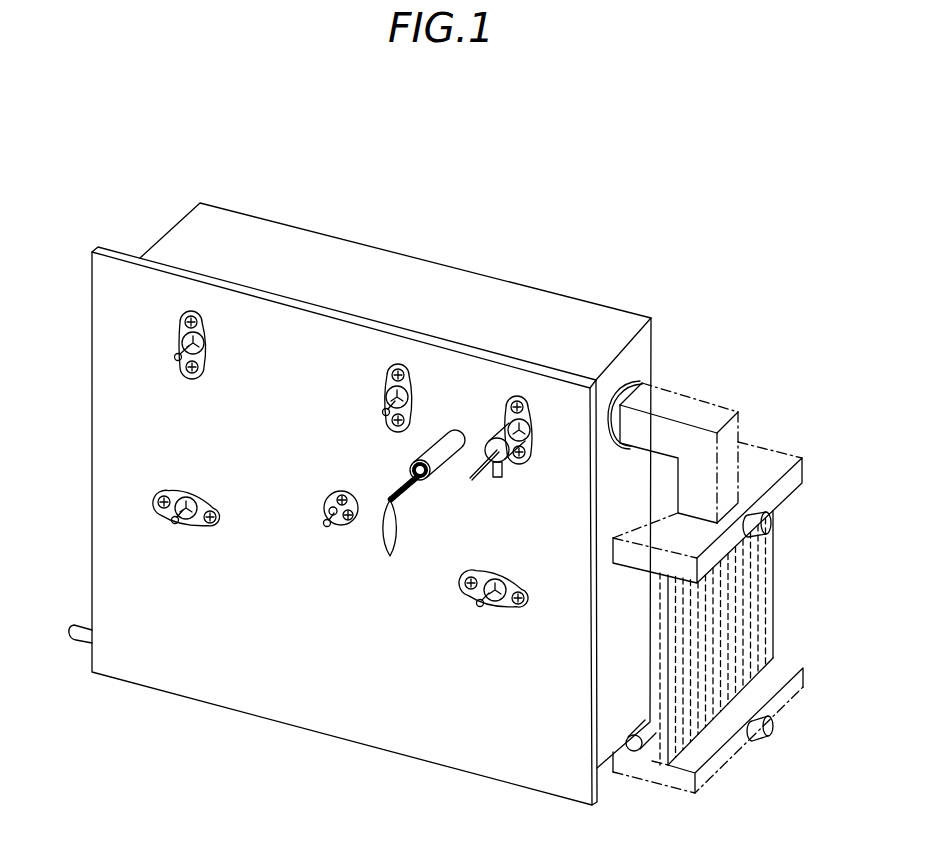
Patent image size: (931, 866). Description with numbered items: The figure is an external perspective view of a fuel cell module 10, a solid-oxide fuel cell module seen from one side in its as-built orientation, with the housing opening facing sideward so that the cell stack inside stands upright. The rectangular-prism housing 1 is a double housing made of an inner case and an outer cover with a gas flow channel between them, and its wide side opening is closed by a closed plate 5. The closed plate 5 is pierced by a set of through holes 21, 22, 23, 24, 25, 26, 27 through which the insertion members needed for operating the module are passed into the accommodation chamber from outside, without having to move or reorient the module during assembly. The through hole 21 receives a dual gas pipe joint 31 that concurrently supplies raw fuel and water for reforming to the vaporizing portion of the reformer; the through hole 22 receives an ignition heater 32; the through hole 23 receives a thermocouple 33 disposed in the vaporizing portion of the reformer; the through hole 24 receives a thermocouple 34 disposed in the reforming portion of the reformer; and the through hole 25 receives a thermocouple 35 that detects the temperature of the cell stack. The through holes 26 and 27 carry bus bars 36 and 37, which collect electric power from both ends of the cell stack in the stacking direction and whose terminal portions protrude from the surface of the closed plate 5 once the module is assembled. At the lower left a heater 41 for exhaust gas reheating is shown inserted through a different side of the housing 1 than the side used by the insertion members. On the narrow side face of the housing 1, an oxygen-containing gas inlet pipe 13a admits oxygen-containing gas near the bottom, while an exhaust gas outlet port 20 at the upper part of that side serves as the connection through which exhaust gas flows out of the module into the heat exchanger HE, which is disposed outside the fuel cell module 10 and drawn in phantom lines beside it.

The housing 1 is at (285, 265).
The closed plate 5 is at (118, 250).
The fuel cell module 10 is at (601, 286).
The oxygen-containing gas inlet pipe 13a is at (628, 752).
The exhaust gas outlet port 20 is at (683, 397).
The heat exchanger HE is at (763, 447).
The through hole 21 is at (507, 422).
The through hole 22 is at (448, 432).
The through hole 23 is at (383, 393).
The through hole 24 is at (178, 337).
The through hole 25 is at (333, 502).
The through hole 26 is at (478, 582).
The through hole 27 is at (175, 495).
The dual gas pipe joint 31 is at (507, 466).
The ignition heater 32 is at (390, 556).
The thermocouple 33 is at (384, 410).
The thermocouple 34 is at (175, 355).
The thermocouple 35 is at (324, 519).
The bus bar 36 is at (477, 605).
The bus bar 37 is at (171, 520).
The heater 41 is at (76, 641).